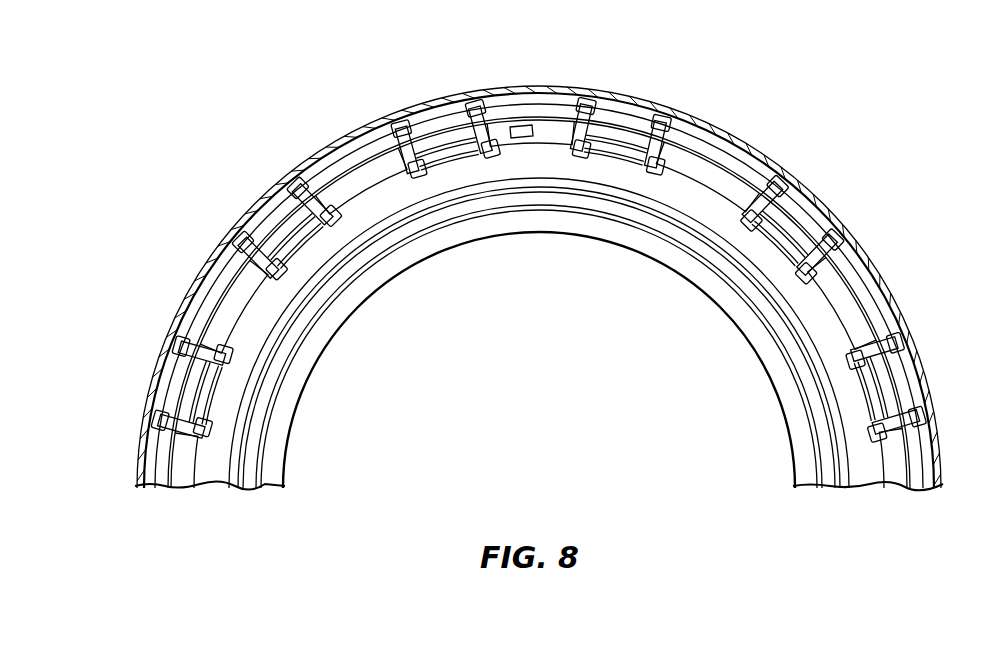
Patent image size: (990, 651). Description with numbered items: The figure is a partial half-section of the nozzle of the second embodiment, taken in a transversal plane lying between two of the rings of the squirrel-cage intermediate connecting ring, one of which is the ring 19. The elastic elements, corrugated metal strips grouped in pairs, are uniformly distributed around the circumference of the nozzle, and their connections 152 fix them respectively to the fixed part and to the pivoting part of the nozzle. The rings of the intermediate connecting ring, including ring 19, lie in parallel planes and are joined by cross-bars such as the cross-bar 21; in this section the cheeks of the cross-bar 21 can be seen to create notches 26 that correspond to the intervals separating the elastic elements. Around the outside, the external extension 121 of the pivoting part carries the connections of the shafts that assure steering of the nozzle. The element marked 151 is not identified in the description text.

The ring 19 is at (343, 175).
The cross-bar 21 is at (530, 128).
The external extension 121 is at (667, 115).
The retaining clip 151 is at (772, 182).
The connections of the elastic elements 152 is at (843, 362).
The notches 26 is at (235, 313).